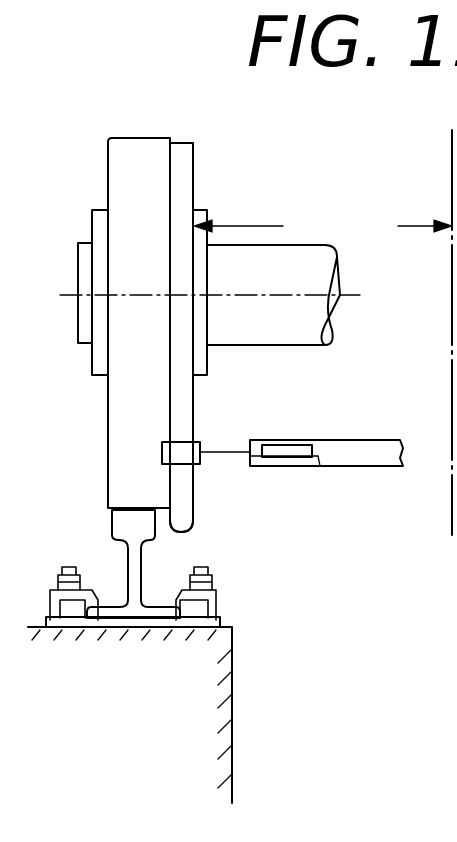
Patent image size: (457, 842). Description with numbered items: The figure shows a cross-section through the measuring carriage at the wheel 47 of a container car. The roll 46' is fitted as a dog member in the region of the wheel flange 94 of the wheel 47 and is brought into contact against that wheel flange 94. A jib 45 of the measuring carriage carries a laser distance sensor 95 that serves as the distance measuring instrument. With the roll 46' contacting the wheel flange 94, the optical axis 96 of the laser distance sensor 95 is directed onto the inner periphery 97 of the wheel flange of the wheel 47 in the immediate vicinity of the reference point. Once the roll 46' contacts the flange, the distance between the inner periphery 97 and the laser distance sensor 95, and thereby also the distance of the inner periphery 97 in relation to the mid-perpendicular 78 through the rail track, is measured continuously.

The wheel 47 is at (143, 158).
The inner periphery of the wheel flange 97 is at (194, 188).
The wheel flange 94 is at (182, 500).
The mid-perpendicular 78 is at (452, 150).
The optical axis 96 is at (218, 452).
The laser distance sensor 95 is at (290, 452).
The jib 45 is at (358, 456).
The roll 46' is at (104, 514).